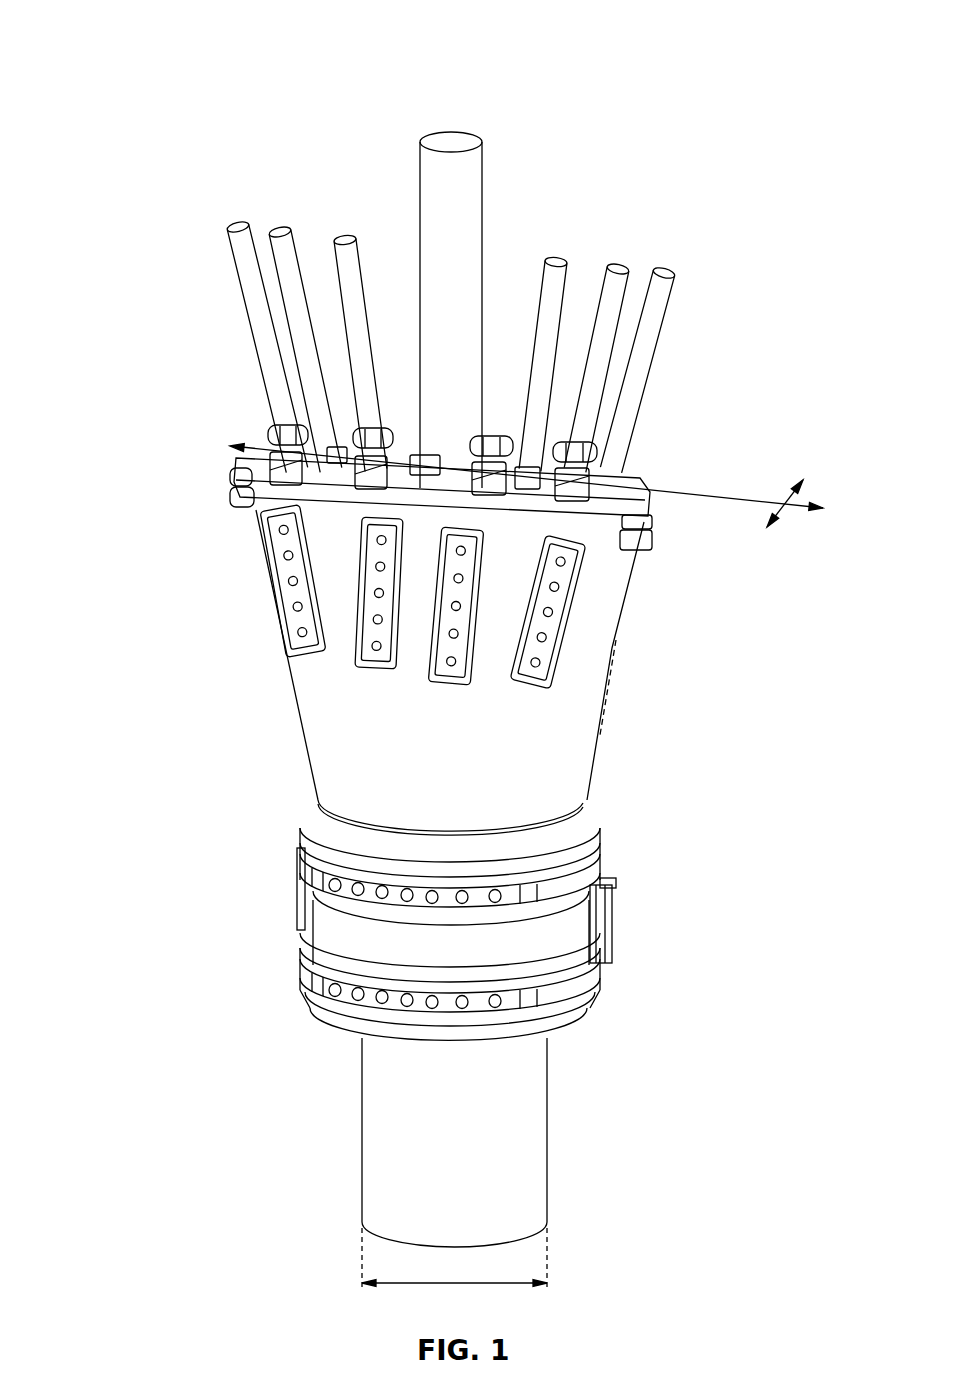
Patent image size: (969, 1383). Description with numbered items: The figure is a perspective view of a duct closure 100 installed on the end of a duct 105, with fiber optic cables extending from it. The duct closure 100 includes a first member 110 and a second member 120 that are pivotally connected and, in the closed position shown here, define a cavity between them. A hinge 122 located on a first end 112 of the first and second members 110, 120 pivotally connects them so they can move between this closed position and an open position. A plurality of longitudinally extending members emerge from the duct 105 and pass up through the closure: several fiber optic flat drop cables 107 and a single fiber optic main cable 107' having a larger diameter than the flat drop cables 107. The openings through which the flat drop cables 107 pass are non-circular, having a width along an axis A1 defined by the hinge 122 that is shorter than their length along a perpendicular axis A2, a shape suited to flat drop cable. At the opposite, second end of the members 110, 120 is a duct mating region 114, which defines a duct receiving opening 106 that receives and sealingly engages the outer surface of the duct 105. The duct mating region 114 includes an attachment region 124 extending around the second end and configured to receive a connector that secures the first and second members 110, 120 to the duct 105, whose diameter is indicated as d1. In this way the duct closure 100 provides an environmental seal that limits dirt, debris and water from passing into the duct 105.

The duct closure 100 is at (143, 42).
The duct 105 is at (533, 1092).
The duct receiving opening 106 is at (560, 1035).
The fiber optic flat drop cables 107 is at (448, 320).
The fiber optic main cable 107' is at (448, 288).
The first member 110 is at (643, 483).
The first end 112 is at (220, 482).
The duct mating region 114 is at (282, 938).
The second member 120 is at (310, 716).
The hinge 122 is at (272, 430).
The attachment region 124 is at (557, 933).
The axis A1 is at (737, 500).
The axis A2 is at (797, 494).
The diameter d1 is at (447, 1280).